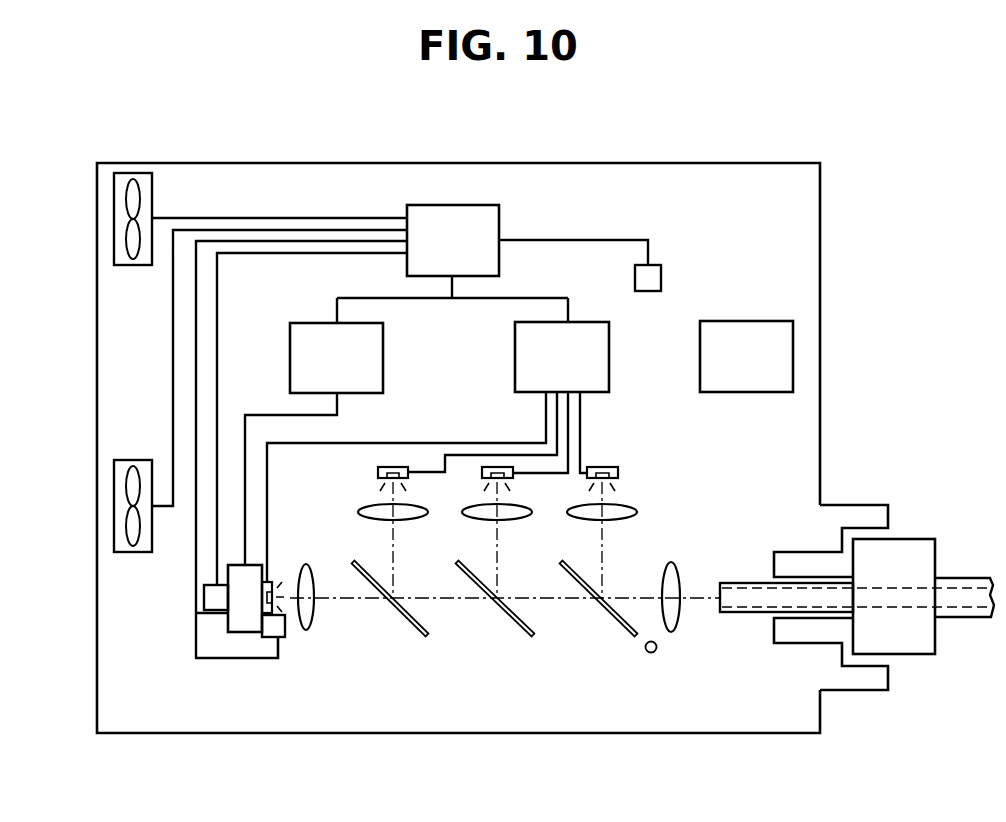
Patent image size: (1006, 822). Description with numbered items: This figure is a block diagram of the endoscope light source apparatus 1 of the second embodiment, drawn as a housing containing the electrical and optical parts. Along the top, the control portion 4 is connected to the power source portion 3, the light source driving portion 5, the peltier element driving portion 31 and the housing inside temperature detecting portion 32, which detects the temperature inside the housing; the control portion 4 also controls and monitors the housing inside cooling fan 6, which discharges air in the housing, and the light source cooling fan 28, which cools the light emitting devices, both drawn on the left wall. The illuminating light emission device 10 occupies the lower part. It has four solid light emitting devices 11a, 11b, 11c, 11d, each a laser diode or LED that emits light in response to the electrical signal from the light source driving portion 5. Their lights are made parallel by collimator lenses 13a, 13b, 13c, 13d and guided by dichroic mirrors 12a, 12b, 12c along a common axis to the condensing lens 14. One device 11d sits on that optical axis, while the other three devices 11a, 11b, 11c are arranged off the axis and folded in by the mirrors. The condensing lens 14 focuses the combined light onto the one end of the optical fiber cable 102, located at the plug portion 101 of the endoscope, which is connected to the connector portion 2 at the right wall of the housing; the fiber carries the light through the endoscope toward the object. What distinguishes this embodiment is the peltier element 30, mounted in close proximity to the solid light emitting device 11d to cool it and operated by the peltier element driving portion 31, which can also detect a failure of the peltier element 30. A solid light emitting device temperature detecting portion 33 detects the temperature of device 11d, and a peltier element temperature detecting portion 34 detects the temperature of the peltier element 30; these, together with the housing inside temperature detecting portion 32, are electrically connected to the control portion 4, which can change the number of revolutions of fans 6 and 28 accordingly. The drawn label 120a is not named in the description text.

The endoscope light source apparatus 1 is at (485, 735).
The connector portion 2 is at (888, 670).
The power source portion 3 is at (750, 321).
The control portion 4 is at (499, 216).
The light source driving portion 5 is at (590, 322).
The housing inside cooling fan 6 is at (114, 214).
The illuminating light emission device 10 is at (521, 662).
The solid light emitting device 11a is at (608, 467).
The solid light emitting device 11b is at (502, 467).
The solid light emitting device 11c is at (378, 480).
The solid light emitting device 11d is at (272, 615).
The dichroic mirror 12a is at (612, 618).
The dichroic mirror 12b is at (503, 610).
The dichroic mirror 12c is at (395, 610).
The collimator lens 13a is at (585, 518).
The collimator lens 13b is at (478, 518).
The collimator lens 13c is at (380, 518).
The collimator lens 13d is at (308, 632).
The condensing lens 14 is at (677, 575).
The light source cooling fan 28 is at (114, 506).
The peltier element 30 is at (237, 632).
The peltier element driving portion 31 is at (383, 345).
The housing inside temperature detecting portion 32 is at (661, 278).
The solid light emitting device temperature detecting portion 33 is at (265, 637).
The peltier element temperature detecting portion 34 is at (195, 612).
The plug portion 101 is at (935, 560).
The optical fiber cable 102 is at (905, 588).
The light guide incident end 120a is at (718, 600).